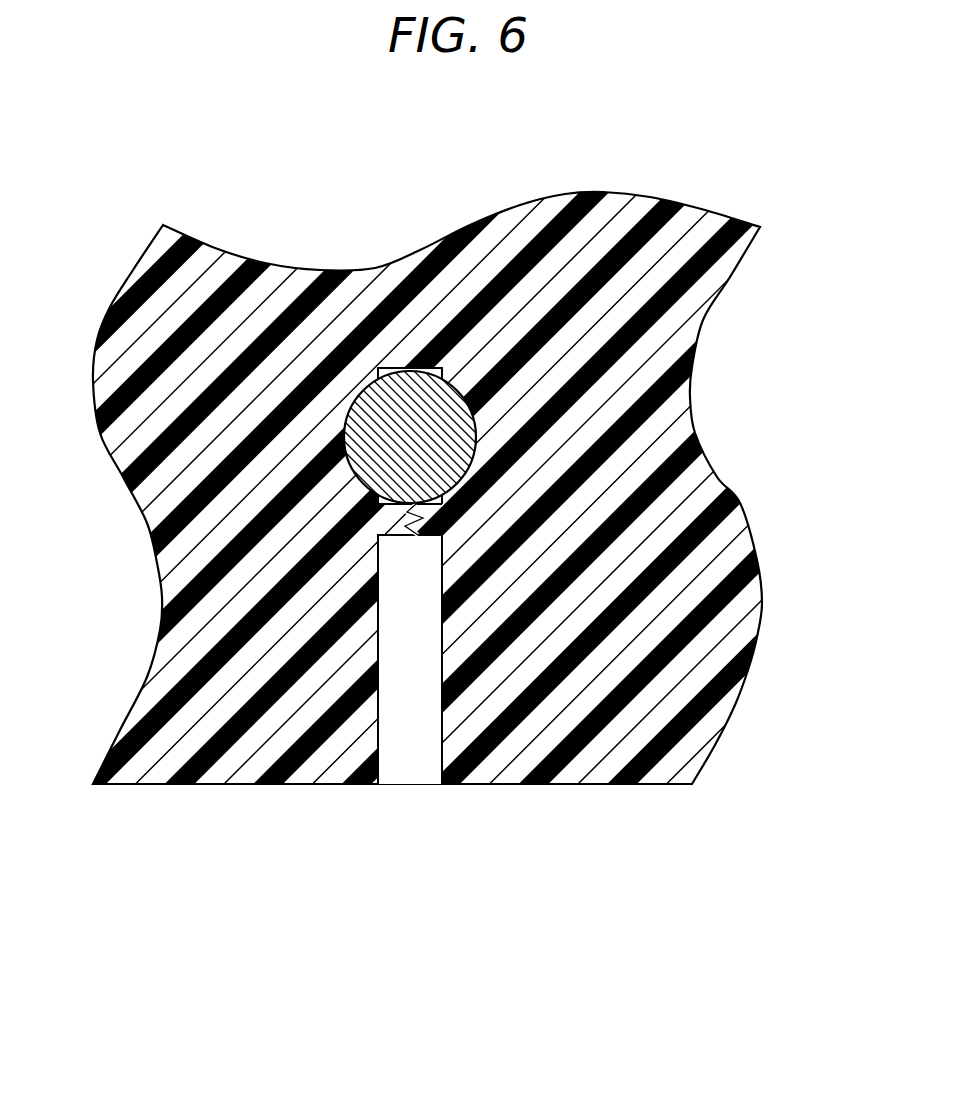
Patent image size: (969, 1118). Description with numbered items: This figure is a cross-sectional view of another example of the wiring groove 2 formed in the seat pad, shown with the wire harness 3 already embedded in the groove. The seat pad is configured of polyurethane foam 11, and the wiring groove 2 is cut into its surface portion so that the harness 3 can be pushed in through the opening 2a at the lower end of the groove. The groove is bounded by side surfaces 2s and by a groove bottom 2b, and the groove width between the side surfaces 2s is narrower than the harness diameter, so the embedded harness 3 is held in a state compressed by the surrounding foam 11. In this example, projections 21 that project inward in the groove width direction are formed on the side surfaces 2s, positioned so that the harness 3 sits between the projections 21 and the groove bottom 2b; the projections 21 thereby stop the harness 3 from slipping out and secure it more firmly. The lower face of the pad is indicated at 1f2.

The polyurethane foam 11 is at (157, 743).
The wiring groove 2 is at (397, 685).
The opening 2a is at (408, 768).
The groove bottom 2b is at (402, 375).
The side surfaces 2s is at (380, 647).
The projections 21 is at (400, 514).
The wire harness 3 is at (435, 430).
The housing bottom surface 1f2 is at (537, 784).